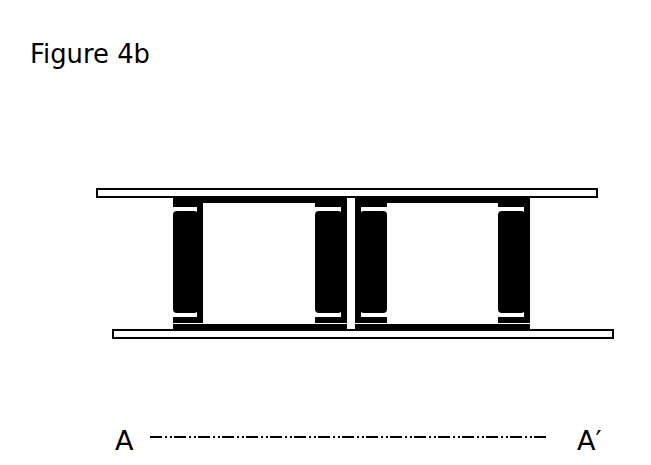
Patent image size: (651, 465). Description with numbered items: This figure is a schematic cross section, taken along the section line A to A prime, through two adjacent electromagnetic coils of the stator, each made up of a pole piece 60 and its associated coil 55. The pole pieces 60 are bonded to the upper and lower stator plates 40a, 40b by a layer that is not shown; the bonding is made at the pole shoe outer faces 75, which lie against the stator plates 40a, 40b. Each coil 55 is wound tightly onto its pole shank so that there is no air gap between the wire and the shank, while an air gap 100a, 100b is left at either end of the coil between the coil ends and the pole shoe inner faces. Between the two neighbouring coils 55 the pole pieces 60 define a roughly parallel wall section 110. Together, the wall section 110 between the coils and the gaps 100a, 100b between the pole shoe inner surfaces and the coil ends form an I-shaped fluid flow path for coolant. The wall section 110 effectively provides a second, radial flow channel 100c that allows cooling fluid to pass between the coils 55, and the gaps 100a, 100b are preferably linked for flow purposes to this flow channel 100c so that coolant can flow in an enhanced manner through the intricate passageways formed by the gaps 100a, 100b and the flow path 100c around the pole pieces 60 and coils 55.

The stator plate 40a is at (125, 186).
The stator plate 40b is at (114, 344).
The coil 55 is at (172, 287).
The pole piece 60 is at (242, 250).
The pole shoe outer face 75 is at (305, 192).
The air gap 100a is at (368, 207).
The air gap 100b is at (358, 322).
The radial flow channel 100c is at (362, 207).
The wall section 110 is at (355, 284).